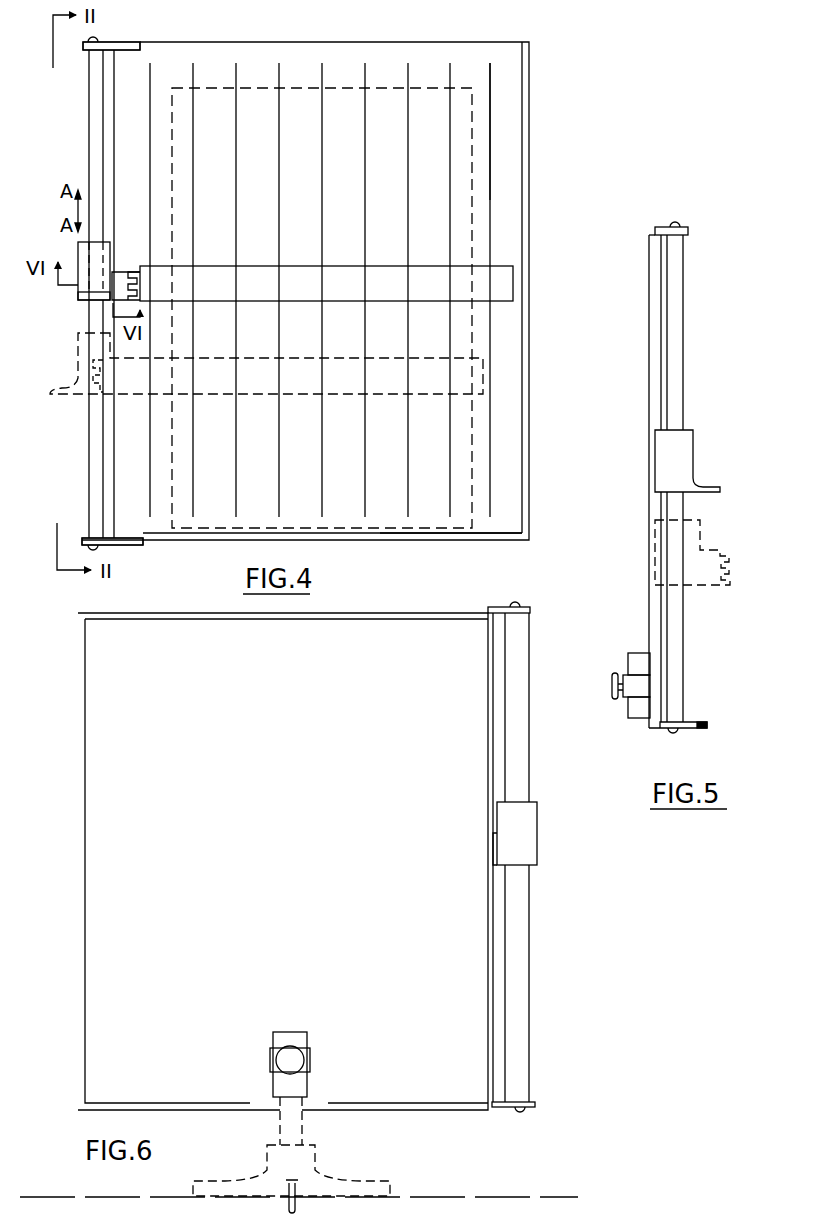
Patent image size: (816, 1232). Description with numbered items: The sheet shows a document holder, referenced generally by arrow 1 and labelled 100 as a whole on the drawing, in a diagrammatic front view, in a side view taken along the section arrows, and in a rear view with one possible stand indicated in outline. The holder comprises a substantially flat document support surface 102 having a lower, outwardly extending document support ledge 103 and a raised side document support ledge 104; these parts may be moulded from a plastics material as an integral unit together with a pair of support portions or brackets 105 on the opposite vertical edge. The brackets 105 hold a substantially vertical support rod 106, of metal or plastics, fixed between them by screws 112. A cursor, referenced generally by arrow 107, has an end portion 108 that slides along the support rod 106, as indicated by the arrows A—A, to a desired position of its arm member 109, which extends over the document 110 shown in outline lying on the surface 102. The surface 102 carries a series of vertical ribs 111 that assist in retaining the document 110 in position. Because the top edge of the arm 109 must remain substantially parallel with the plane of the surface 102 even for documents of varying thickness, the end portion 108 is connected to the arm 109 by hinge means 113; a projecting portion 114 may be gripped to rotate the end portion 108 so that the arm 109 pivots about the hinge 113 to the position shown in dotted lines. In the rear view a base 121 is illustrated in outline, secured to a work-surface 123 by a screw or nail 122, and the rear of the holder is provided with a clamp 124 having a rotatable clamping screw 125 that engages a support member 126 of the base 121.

In FIG. 6, the wire guide device 1 is at (70, 920).
In FIG. 4, the frame assembly 100 is at (538, 102).
In FIG. 4, the document support surface 102 is at (422, 57).
In FIG. 4, the lower document support ledge 103 is at (457, 534).
In FIG. 4, the side document support ledge 104 is at (530, 355).
In FIG. 4, the support portions 105 is at (108, 42).
In FIG. 5, the support portions 105 is at (697, 222).
In FIG. 4, the support rod 106 is at (97, 127).
In FIG. 5, the support rod 106 is at (677, 355).
In FIG. 6, the support rod 106 is at (523, 733).
In FIG. 4, the cursor 107 is at (336, 262).
In FIG. 4, the end portion 108 is at (80, 252).
In FIG. 5, the end portion 108 is at (685, 456).
In FIG. 6, the end portion 108 is at (528, 840).
In FIG. 4, the arm member 109 is at (345, 297).
In FIG. 4, the document 110 is at (465, 181).
In FIG. 4, the vertical ribs 111 is at (490, 85).
In FIG. 4, the screws 112 is at (90, 548).
In FIG. 5, the screws 112 is at (675, 224).
In FIG. 4, the hinge means 113 is at (133, 262).
In FIG. 4, the projecting portion 114 is at (60, 394).
In FIG. 5, the projecting portion 114 is at (705, 494).
In FIG. 6, the base 121 is at (326, 1157).
In FIG. 6, the screw or nail 122 is at (293, 1193).
In FIG. 6, the work-surface 123 is at (418, 1195).
In FIG. 5, the clamp 124 is at (638, 662).
In FIG. 6, the clamp 124 is at (297, 1090).
In FIG. 5, the rotatable clamping screw 125 is at (611, 688).
In FIG. 6, the rotatable clamping screw 125 is at (287, 1052).
In FIG. 6, the support member 126 is at (292, 1128).